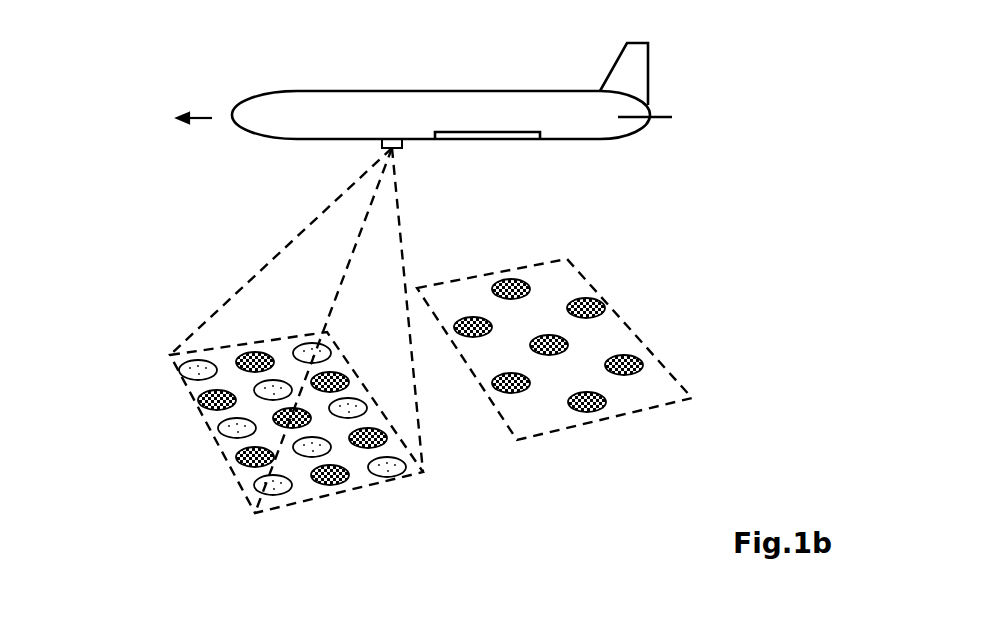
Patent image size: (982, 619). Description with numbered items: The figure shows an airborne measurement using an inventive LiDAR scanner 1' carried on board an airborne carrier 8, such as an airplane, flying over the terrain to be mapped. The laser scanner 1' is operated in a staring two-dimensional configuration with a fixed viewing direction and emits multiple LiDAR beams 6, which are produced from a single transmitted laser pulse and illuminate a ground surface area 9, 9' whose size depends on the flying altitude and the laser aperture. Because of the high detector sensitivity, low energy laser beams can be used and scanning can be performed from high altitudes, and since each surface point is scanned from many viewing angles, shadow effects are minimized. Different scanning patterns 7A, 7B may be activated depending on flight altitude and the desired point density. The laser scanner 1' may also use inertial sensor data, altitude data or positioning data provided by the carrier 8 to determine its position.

The LiDAR scanner 1' is at (296, 259).
The airborne carrier 8 is at (458, 100).
The scanning pattern 7A is at (266, 436).
The scanning pattern 7B is at (603, 334).
The ground surface area 9 is at (245, 436).
The ground surface area 9' is at (598, 349).
The LiDAR beams 6 is at (387, 467).